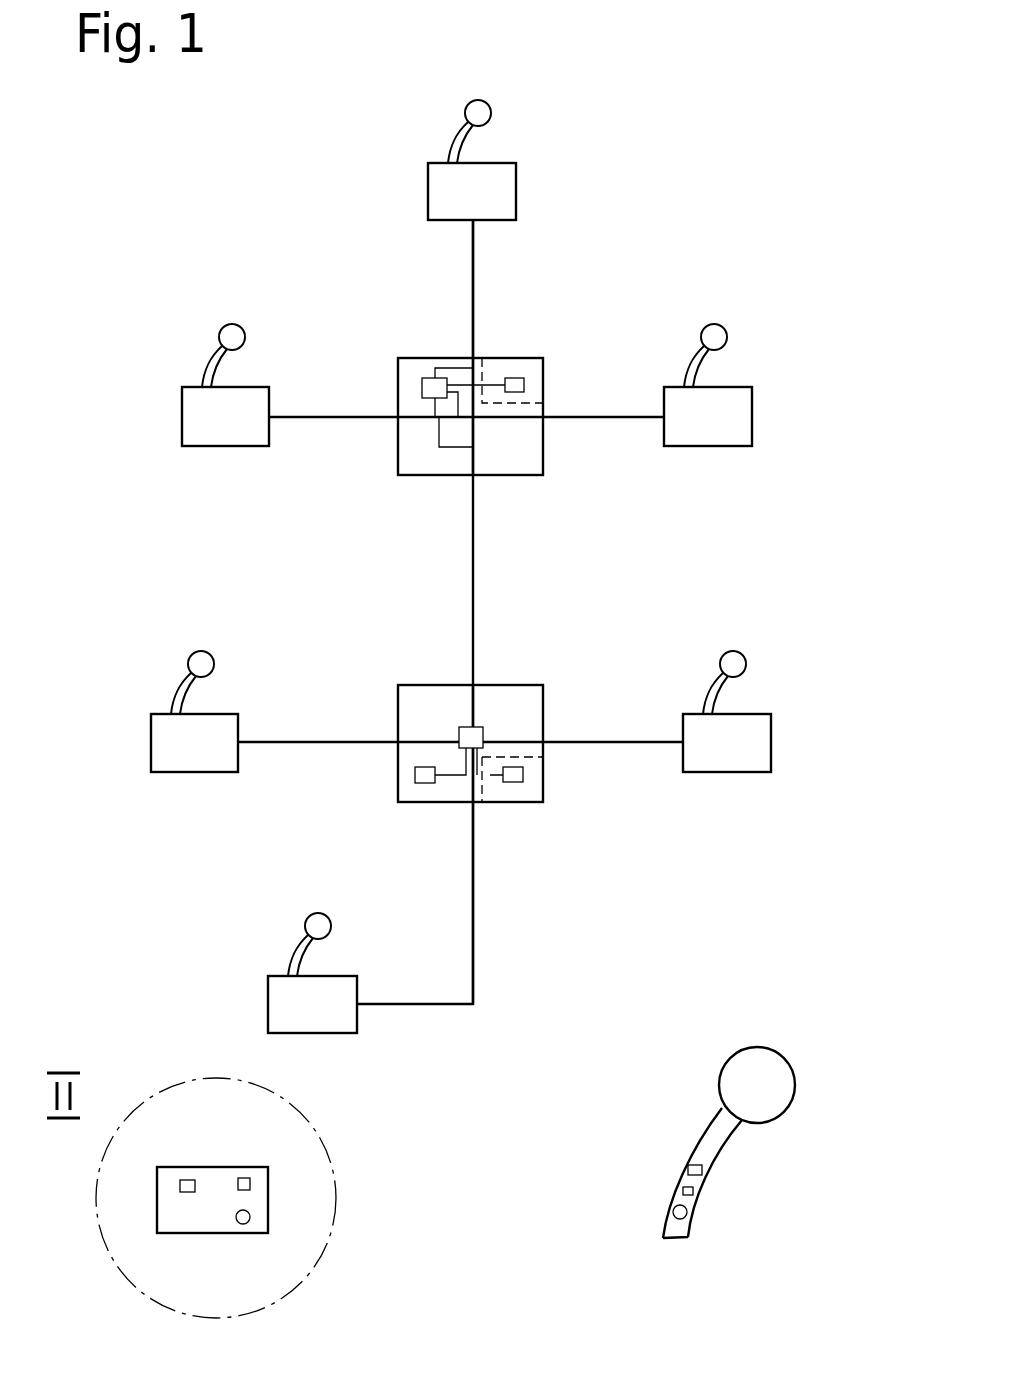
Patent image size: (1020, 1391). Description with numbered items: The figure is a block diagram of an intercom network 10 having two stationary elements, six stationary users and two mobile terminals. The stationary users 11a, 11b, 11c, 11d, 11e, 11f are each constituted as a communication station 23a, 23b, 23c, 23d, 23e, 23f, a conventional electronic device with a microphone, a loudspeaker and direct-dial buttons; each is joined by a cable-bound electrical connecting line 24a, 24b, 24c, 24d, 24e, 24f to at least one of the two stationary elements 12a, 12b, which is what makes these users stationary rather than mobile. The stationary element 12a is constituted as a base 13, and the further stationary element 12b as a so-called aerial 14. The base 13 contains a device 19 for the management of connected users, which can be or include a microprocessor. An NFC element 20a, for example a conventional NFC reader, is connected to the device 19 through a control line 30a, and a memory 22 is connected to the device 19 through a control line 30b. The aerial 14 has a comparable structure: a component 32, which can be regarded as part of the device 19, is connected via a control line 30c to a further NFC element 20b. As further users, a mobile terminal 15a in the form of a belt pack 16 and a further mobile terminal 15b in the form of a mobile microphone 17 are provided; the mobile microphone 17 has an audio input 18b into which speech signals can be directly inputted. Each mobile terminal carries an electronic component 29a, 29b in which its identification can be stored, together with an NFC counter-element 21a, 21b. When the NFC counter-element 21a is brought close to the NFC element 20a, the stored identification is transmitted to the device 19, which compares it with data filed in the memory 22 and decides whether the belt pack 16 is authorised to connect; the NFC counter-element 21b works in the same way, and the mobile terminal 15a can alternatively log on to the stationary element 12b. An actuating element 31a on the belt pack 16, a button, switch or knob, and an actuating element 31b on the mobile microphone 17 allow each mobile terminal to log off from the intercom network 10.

The intercom network 10 is at (708, 180).
The user 11a is at (192, 415).
The user 11b is at (507, 202).
The user 11c is at (727, 422).
The user 11d is at (755, 750).
The user 11e is at (332, 1022).
The user 11f is at (188, 757).
The stationary element 12a is at (504, 708).
The further stationary element 12b is at (510, 462).
The base 13 is at (414, 680).
The aerial 14 is at (407, 488).
The mobile terminal 15a is at (268, 1200).
The further mobile terminal 15b is at (673, 1145).
The belt pack 16 is at (262, 1257).
The mobile microphone 17 is at (703, 1128).
The audio input 18b is at (778, 1043).
The device for the management of connected users 19 is at (486, 735).
The NFC element 20a is at (513, 775).
The further NFC element 20b is at (513, 385).
The NFC counter-element 21a is at (243, 1178).
The NFC counter-element 21b is at (702, 1172).
The memory 22 is at (422, 783).
The communication station 23a is at (182, 440).
The communication station 23b is at (427, 190).
The communication station 23c is at (733, 387).
The communication station 23d is at (743, 714).
The communication station 23e is at (337, 976).
The communication station 23f is at (151, 742).
The electrical connecting line 24a is at (320, 417).
The electrical connecting line 24b is at (473, 285).
The electrical connecting line 24c is at (608, 420).
The electrical connecting line 24d is at (608, 743).
The electrical connecting line 24e is at (474, 950).
The electrical connecting line 24f is at (308, 742).
The electronic component 29a is at (180, 1188).
The electronic component 29b is at (683, 1190).
The control line 30a is at (497, 775).
The control line 30b is at (462, 763).
The control line 30c is at (473, 383).
The actuating element 31a is at (243, 1224).
The actuating element 31b is at (686, 1218).
The component 32 is at (413, 382).